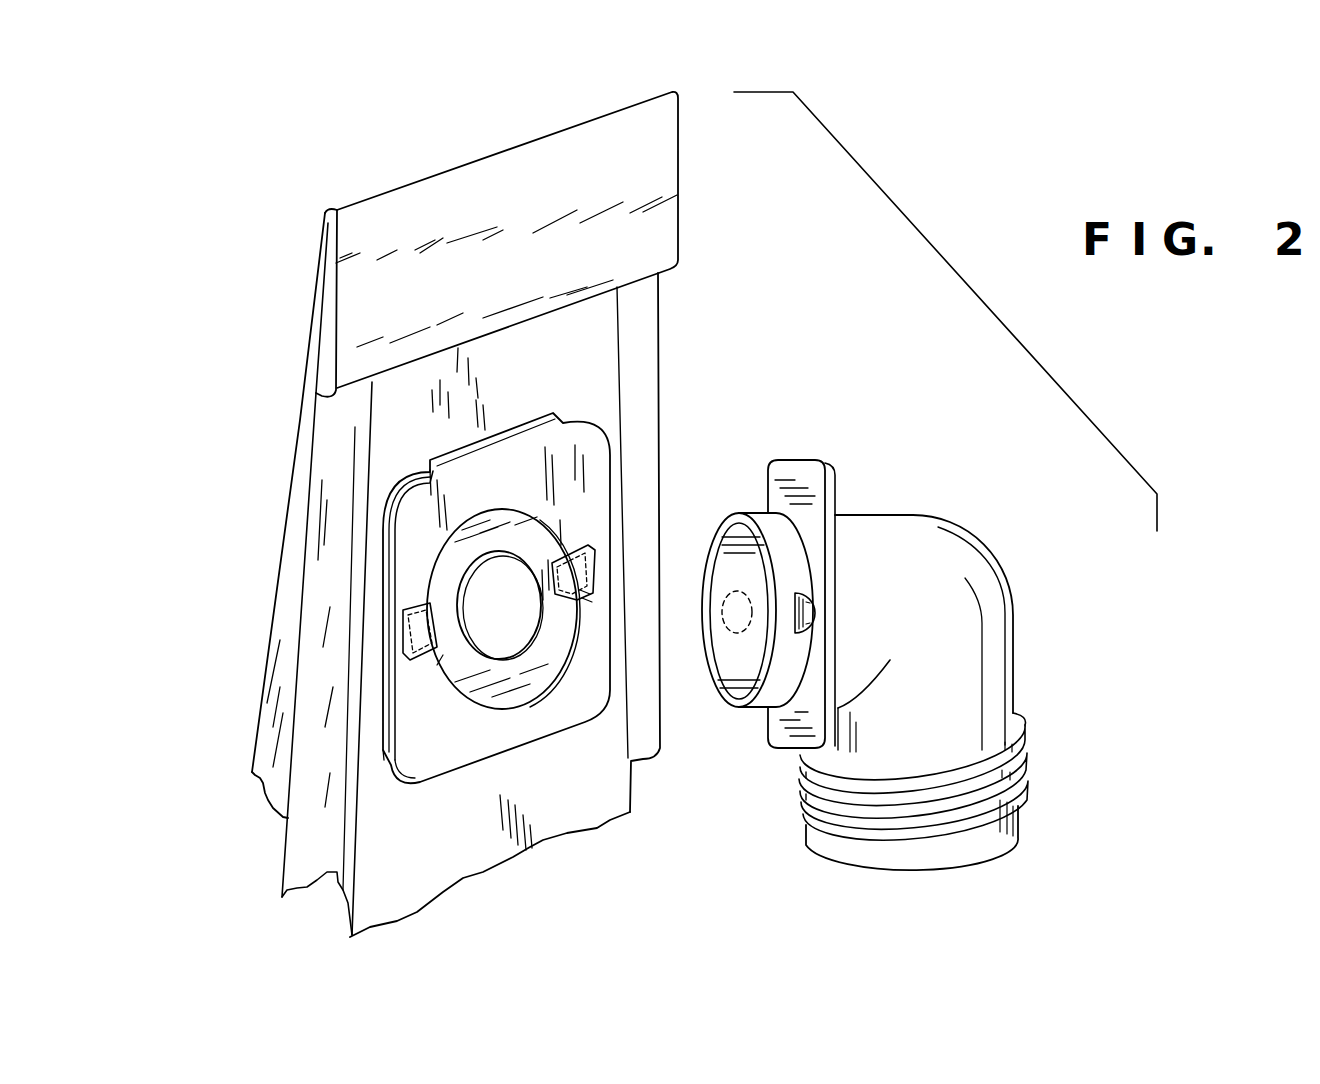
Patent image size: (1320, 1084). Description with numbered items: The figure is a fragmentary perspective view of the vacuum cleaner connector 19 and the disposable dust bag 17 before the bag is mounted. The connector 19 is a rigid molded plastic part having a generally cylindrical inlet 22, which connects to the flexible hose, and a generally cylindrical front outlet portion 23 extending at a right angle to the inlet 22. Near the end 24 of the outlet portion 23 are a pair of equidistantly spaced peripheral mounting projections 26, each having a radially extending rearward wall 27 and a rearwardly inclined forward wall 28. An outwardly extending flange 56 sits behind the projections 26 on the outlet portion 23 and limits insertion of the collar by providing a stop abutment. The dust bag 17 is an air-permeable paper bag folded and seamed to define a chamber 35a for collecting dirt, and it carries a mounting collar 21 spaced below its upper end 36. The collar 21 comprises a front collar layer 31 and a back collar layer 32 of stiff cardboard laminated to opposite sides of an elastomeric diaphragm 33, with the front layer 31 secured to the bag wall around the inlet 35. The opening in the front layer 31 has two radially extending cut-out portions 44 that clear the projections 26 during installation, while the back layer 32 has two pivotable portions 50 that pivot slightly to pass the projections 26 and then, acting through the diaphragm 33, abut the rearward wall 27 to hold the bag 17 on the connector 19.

The disposable dust bag 17 is at (293, 413).
The connector 19 is at (952, 523).
The mounting collar 21 is at (407, 513).
The cylindrical inlet 22 is at (952, 862).
The front outlet portion 23 is at (747, 710).
The end of the outlet portion 24 is at (725, 710).
The peripheral mounting projections 26 is at (722, 610).
The rearward wall 27 is at (808, 633).
The forward wall 28 is at (797, 597).
The front collar layer 31 is at (412, 583).
The back collar layer 32 is at (385, 753).
The elastomeric diaphragm 33 is at (523, 523).
The inlet 35 is at (513, 616).
The chamber 35a is at (262, 750).
The upper end 36 is at (415, 185).
The cut-out portions 44 is at (582, 547).
The pivotable portions 50 is at (440, 665).
The outwardly extending flange 56 is at (796, 466).